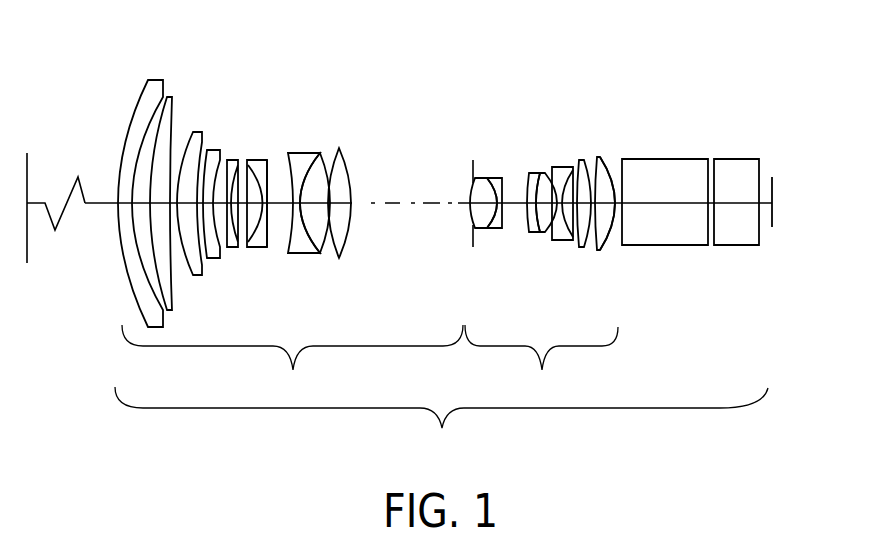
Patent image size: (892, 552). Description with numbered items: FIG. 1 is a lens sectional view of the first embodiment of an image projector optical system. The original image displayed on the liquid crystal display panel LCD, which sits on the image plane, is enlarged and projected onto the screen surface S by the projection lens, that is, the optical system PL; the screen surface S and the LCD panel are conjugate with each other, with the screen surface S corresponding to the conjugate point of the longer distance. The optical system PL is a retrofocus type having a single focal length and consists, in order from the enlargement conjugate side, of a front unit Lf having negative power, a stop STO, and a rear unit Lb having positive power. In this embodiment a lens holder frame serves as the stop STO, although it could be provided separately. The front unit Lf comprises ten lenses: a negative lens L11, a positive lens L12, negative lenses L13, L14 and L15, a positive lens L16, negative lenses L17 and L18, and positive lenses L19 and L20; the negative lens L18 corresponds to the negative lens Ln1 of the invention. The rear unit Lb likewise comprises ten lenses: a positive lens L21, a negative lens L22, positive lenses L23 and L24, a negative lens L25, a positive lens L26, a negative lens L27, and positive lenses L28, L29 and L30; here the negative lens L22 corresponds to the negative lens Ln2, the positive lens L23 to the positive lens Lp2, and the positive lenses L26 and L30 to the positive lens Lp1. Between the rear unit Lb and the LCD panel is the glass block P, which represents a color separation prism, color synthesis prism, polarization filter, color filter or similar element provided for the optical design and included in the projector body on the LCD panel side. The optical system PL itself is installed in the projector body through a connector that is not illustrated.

The screen surface S is at (28, 169).
The negative lens L11 is at (147, 103).
The positive lens L12 is at (169, 108).
The negative lens L13 is at (195, 136).
The negative lens L14 is at (213, 152).
The negative lens L15 is at (237, 160).
The positive lens L16 is at (251, 226).
The negative lens L17 is at (262, 235).
The negative lens L18 is at (298, 240).
The positive lens L19 is at (320, 237).
The positive lens L20 is at (338, 175).
The stop STO is at (473, 232).
The positive lens L21 is at (472, 185).
The negative lens L22 is at (485, 178).
The positive lens L23 is at (503, 172).
The positive lens L24 is at (530, 226).
The negative lens L25 is at (535, 230).
The positive lens L26 is at (557, 240).
The negative lens L27 is at (560, 170).
The positive lens L28 is at (583, 195).
The positive lens L29 is at (608, 187).
The positive lens L30 is at (612, 190).
The glass block P is at (732, 228).
The liquid crystal display panel LCD is at (772, 181).
The front unit Lf is at (292, 362).
The rear unit Lb is at (541, 362).
The optical system PL is at (441, 425).